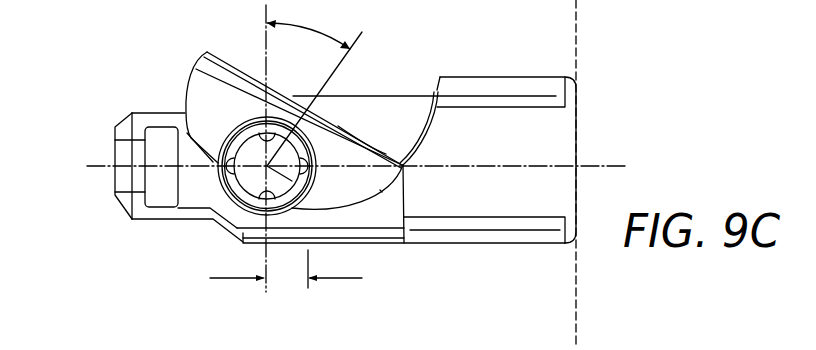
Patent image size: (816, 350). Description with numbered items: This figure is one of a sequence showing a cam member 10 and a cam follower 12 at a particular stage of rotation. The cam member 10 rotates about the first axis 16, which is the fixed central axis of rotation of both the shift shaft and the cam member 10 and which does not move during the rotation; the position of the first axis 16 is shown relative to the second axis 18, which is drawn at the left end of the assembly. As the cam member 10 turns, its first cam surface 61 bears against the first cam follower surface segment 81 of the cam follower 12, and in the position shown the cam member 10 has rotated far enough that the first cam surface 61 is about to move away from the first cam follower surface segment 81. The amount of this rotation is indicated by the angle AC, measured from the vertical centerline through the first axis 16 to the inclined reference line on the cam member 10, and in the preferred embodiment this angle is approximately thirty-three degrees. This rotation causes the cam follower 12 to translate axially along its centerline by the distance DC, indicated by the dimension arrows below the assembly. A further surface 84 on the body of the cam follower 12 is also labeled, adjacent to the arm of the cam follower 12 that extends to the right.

The cam member 10 is at (195, 89).
The cam follower 12 is at (488, 85).
The first axis 16 is at (305, 186).
The second axis 18 is at (97, 168).
The first cam surface 61 is at (393, 202).
The first cam follower surface segment 81 is at (407, 166).
The surface 84 is at (388, 198).
The angle of cam member rotation AC is at (314, 93).
The axial movement distance of cam follower DC is at (284, 283).